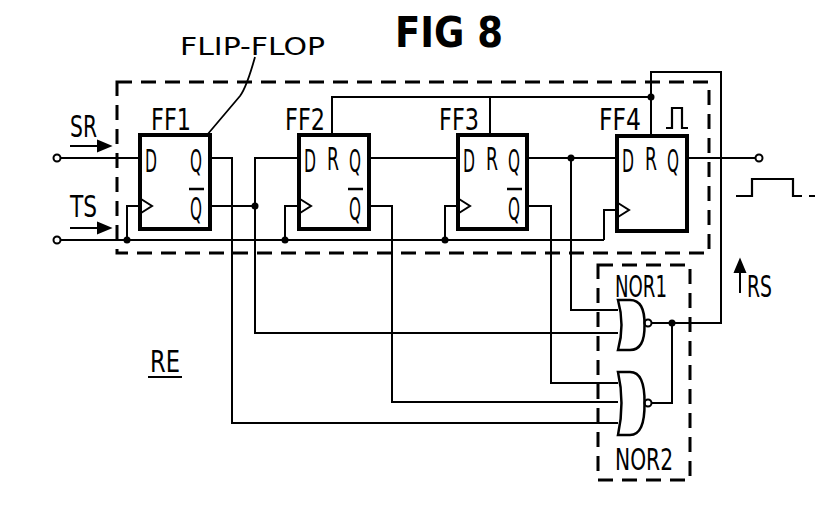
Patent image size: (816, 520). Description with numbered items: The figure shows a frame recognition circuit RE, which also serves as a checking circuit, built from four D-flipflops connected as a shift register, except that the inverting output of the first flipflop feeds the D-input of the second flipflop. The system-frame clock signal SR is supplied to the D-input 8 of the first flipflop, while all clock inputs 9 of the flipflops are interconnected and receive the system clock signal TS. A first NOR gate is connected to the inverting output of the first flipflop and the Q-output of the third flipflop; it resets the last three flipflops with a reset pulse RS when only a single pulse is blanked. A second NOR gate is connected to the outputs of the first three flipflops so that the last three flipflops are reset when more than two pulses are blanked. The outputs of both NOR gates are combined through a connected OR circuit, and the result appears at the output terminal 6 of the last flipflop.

The D-input 8 is at (86, 159).
The clock inputs 9 is at (318, 242).
The output terminal 6 is at (734, 159).